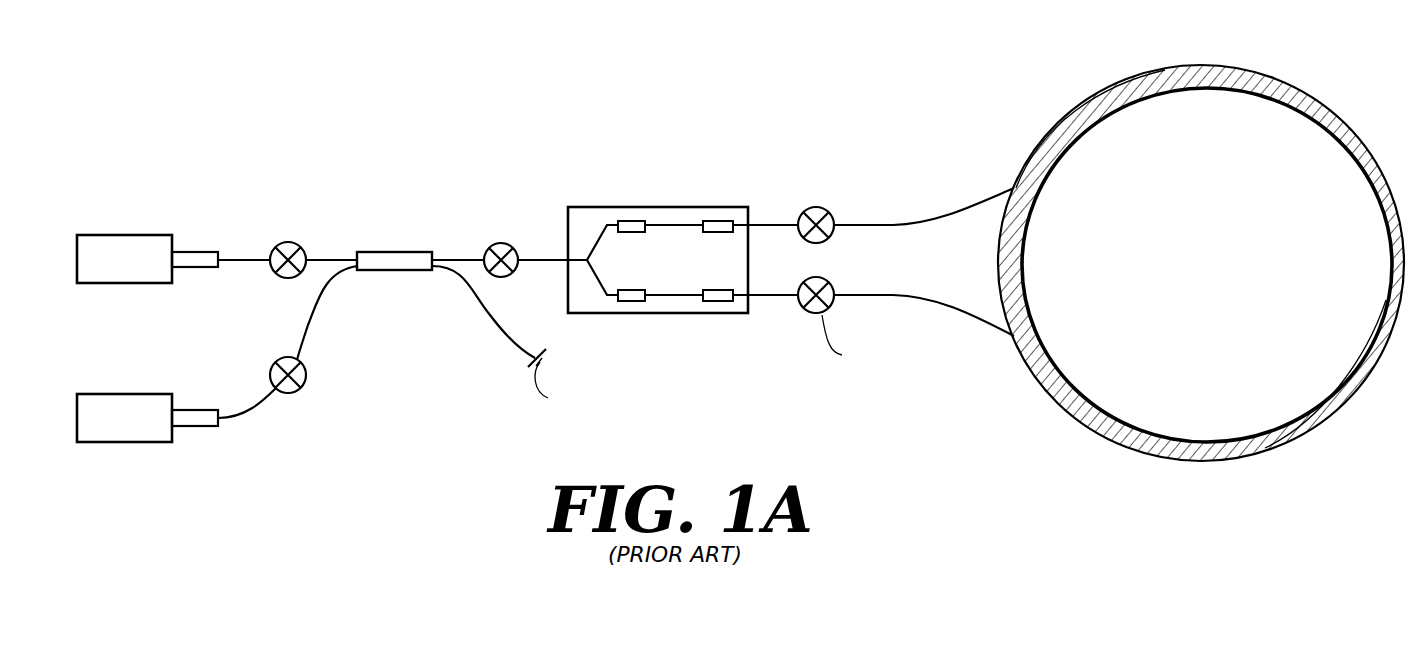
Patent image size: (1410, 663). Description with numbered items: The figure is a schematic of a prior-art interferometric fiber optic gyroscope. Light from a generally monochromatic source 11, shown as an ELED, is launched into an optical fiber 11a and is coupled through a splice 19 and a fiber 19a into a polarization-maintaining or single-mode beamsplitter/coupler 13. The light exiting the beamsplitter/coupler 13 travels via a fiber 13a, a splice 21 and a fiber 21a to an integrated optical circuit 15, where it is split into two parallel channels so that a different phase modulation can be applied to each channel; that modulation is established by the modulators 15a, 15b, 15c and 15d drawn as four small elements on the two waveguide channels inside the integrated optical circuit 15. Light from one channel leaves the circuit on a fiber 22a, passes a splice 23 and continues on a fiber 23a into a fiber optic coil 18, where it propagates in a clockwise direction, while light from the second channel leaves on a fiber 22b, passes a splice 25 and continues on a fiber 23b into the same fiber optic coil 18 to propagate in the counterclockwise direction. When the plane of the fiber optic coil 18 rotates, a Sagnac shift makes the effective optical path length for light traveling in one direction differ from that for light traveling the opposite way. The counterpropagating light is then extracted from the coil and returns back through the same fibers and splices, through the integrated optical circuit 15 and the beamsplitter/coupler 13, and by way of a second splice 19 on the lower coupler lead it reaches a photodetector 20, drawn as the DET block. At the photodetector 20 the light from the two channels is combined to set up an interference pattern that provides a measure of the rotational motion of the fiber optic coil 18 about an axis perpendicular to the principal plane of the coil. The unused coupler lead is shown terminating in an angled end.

The monochromatic source 11 is at (121, 236).
The optical fiber 11a is at (250, 255).
The splice 19 is at (291, 242).
The fiber 19a is at (334, 256).
The beamsplitter/coupler 13 is at (393, 258).
The fiber 13a is at (455, 258).
The splice 21 is at (501, 243).
The fiber 21a is at (540, 259).
The integrated optical circuit 15 is at (683, 262).
The modulator 15a is at (626, 221).
The modulator 15b is at (715, 221).
The modulator 15c is at (632, 290).
The modulator 15d is at (715, 290).
The fiber 22a is at (777, 224).
The fiber 22b is at (779, 294).
The splice 23 is at (820, 207).
The splice 25 is at (820, 277).
The fiber 23a is at (940, 219).
The fiber 23b is at (946, 301).
The fiber optic coil 18 is at (1038, 383).
The photodetector 20 is at (130, 395).